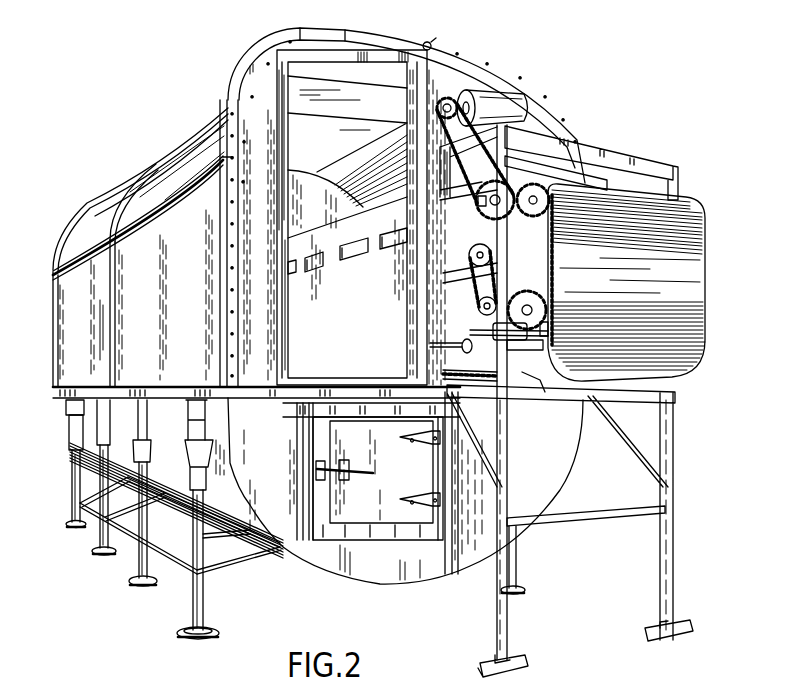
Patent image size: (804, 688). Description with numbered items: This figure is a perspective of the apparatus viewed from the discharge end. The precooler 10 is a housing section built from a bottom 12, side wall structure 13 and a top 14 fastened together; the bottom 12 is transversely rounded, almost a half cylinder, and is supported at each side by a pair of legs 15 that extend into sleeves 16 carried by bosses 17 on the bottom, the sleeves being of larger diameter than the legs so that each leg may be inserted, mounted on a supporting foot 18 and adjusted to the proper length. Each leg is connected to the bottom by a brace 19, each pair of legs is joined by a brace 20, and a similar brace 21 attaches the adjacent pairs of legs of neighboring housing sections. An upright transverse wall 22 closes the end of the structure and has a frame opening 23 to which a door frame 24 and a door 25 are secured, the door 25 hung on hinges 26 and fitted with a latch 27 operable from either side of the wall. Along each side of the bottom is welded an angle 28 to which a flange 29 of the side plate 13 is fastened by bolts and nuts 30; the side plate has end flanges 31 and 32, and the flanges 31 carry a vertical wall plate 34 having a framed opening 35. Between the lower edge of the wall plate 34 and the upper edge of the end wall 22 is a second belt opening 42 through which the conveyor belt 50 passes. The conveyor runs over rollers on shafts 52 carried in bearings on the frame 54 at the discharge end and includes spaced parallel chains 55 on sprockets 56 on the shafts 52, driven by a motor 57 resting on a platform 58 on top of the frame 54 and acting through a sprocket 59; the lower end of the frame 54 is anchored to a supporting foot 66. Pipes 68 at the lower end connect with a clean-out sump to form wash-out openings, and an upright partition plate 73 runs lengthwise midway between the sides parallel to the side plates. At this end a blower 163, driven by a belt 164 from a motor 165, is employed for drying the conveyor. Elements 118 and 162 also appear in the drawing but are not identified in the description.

The precooler 10 is at (181, 118).
The bottom 12 is at (393, 587).
The side wall structure 13 is at (90, 321).
The top 14 is at (137, 168).
The legs 15 is at (70, 510).
The sleeves 16 is at (87, 453).
The bosses 17 is at (97, 410).
The supporting foot 18 is at (80, 530).
The brace 19 is at (247, 563).
The brace 20 is at (83, 493).
The brace 21 is at (127, 537).
The upright transverse wall 22 is at (433, 570).
The frame opening 23 is at (297, 432).
The door frame 24 is at (317, 412).
The door 25 is at (360, 513).
The hinges 26 is at (417, 490).
The latch 27 is at (357, 467).
The angle 28 is at (233, 384).
The flange 29 is at (220, 386).
The bolts and nuts 30 is at (153, 383).
The end flange 31 is at (53, 297).
The end flange 32 is at (107, 272).
The vertical wall plate 34 is at (380, 52).
The framed opening 35 is at (283, 347).
The second belt opening 42 is at (443, 373).
The conveyor belt 50 is at (684, 214).
The shafts 52 is at (557, 221).
The frame 54 is at (656, 155).
The chains 55 is at (708, 268).
The sprockets 56 is at (556, 212).
The motor 57 is at (497, 97).
The platform 58 is at (527, 127).
The sprocket 59 is at (480, 207).
The supporting feet 66 is at (523, 663).
The pipes 68 is at (140, 490).
The upright partition plate 73 is at (333, 305).
The bracket 118 is at (438, 41).
The control rod 162 is at (430, 346).
The blower 163 is at (540, 293).
The belt 164 is at (490, 297).
The motor 165 is at (487, 250).